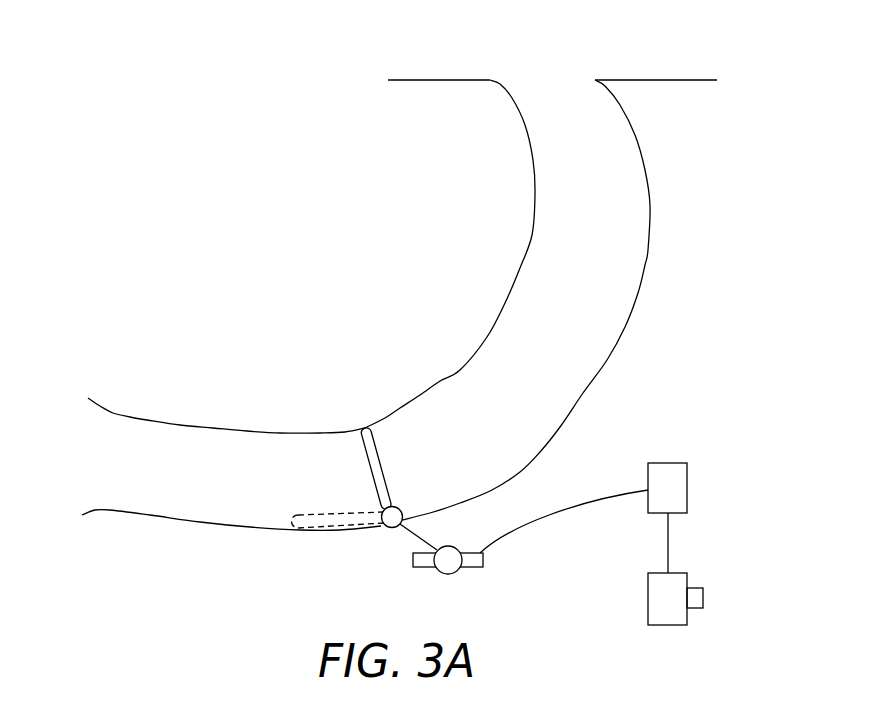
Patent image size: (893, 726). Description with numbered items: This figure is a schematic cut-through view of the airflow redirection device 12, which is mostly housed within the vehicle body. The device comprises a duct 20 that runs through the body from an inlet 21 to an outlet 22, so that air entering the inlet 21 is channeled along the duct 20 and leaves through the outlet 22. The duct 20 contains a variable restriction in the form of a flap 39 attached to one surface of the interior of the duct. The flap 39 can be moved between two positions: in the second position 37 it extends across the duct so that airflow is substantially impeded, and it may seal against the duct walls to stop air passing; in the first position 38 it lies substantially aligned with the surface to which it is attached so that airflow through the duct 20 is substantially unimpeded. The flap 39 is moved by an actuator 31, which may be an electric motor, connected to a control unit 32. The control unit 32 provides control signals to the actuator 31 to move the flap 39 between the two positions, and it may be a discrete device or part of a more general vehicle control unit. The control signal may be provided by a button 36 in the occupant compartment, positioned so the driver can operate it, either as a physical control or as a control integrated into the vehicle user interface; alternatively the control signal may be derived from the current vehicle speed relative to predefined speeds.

The airflow redirection device 12 is at (74, 537).
The duct 20 is at (153, 519).
The inlet 21 is at (106, 457).
The outlet 22 is at (549, 87).
The actuator 31 is at (484, 560).
The control unit 32 is at (688, 475).
The button 36 is at (704, 598).
The second position 37 is at (378, 451).
The first position 38 is at (313, 512).
The flap 39 is at (380, 547).